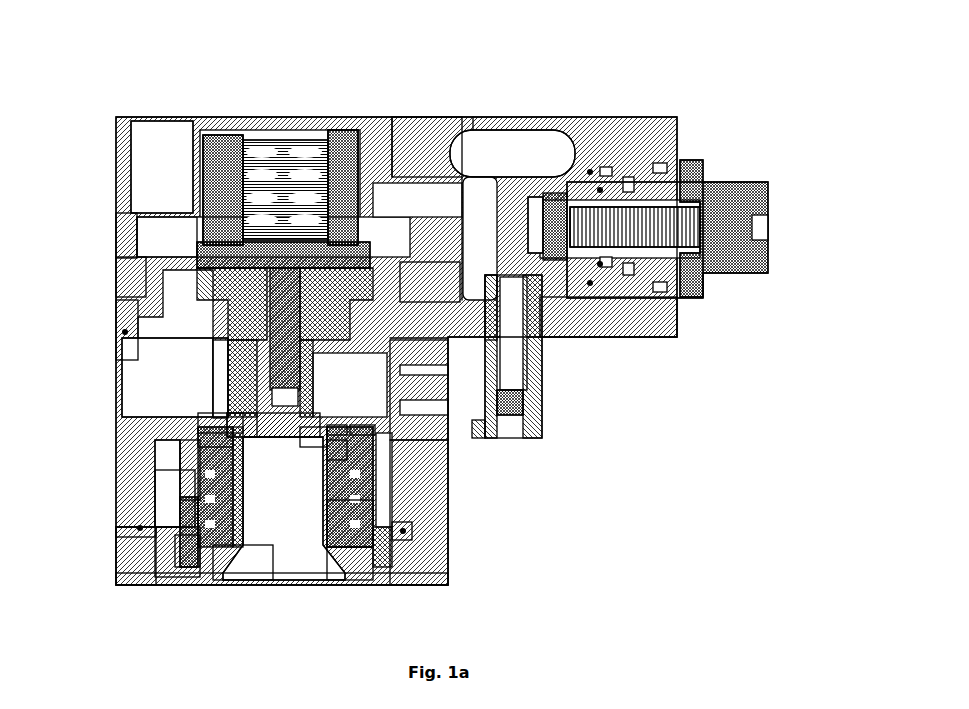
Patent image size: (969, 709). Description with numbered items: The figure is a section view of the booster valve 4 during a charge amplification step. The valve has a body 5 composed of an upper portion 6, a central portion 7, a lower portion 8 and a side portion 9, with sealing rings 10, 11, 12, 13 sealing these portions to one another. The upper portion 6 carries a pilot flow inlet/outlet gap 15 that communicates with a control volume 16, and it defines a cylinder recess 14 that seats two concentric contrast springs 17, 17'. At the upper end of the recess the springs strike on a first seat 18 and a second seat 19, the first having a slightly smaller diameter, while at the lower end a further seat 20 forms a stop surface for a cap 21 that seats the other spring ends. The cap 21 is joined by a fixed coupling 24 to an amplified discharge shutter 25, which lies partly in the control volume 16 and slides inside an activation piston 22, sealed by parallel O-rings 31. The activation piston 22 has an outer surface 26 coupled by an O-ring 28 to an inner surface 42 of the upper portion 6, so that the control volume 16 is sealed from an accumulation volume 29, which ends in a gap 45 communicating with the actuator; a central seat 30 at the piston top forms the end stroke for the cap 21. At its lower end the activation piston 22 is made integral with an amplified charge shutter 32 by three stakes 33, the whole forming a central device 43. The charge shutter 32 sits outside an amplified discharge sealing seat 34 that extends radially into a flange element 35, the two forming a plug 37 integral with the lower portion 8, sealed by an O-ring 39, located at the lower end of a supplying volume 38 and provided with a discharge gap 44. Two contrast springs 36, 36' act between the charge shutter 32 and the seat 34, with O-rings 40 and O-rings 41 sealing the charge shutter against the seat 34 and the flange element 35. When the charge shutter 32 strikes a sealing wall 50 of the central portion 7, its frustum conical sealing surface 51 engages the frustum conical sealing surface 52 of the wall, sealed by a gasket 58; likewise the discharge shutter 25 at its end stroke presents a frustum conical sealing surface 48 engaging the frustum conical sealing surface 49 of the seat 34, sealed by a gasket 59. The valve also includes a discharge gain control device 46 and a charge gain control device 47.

The booster valve 4 is at (588, 93).
The body 5 is at (428, 130).
The upper portion 6 is at (672, 145).
The central portion 7 is at (395, 518).
The lower portion 8 is at (397, 563).
The side portion 9 is at (410, 273).
The sealing ring 10 is at (115, 332).
The sealing ring 11 is at (117, 532).
The sealing ring 12 is at (543, 405).
The sealing ring 13 is at (543, 342).
The cylinder recess 14 is at (368, 165).
The pilot flow inlet/outlet gap 15 is at (180, 140).
The control volume 16 is at (193, 260).
The contrast spring 17 is at (224, 125).
The contrast spring 17' is at (241, 150).
The first seat 18 is at (337, 135).
The second seat 19 is at (353, 135).
The seat 20 is at (375, 207).
The cap 21 is at (147, 227).
The activation piston 22 is at (127, 278).
The fixed coupling 24 is at (257, 233).
The amplified discharge shutter 25 is at (212, 425).
The outer surface 26 is at (410, 303).
The O-ring 28 is at (680, 303).
The accumulation volume 29 is at (218, 418).
The central seat 30 is at (317, 313).
The O-rings 31 is at (357, 240).
The amplified charge shutter 32 is at (177, 447).
The stakes 33 is at (217, 357).
The amplified discharge sealing seat 34 is at (245, 560).
The flange element 35 is at (187, 548).
The contrast spring 36 is at (326, 583).
The contrast spring 36' is at (336, 609).
The plug 37 is at (178, 540).
The supplying volume 38 is at (140, 528).
The O-ring 39 is at (170, 530).
The O-rings 40 is at (427, 503).
The O-rings 41 is at (403, 531).
The inner surface 42 is at (138, 238).
The central device 43 is at (175, 477).
The discharge gap 44 is at (305, 557).
The gap 45 is at (197, 402).
The discharge gain control device 46 is at (658, 225).
The charge gain control device 47 is at (658, 225).
The frustum conical sealing surface 48 is at (333, 453).
The frustum conical sealing surface 49 is at (313, 437).
The sealing wall 50 is at (413, 433).
The frustum conical sealing surface 51 is at (340, 425).
The frustum conical sealing surface 52 is at (357, 425).
The gasket 58 is at (197, 437).
The gasket 59 is at (258, 428).